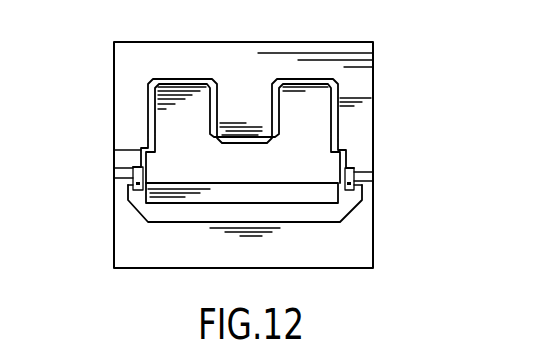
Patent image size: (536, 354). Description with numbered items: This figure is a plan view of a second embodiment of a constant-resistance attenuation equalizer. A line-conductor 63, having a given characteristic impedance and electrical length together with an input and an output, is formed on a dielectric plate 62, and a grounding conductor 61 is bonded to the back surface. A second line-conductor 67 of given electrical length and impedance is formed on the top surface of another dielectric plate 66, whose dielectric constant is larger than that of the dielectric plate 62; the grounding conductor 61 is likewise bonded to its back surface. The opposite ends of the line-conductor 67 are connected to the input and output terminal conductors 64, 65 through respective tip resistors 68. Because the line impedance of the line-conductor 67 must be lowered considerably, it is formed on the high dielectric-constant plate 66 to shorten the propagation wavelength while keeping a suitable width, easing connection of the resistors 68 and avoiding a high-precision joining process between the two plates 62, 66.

The grounding conductor 61 is at (245, 137).
The dielectric plate 62 is at (281, 43).
The line-conductor 63 is at (176, 79).
The input terminal conductor 64 is at (125, 153).
The output terminal conductor 65 is at (368, 158).
The dielectric plate 66 is at (205, 252).
The line-conductor 67 is at (163, 212).
The tip resistors 68 is at (133, 187).